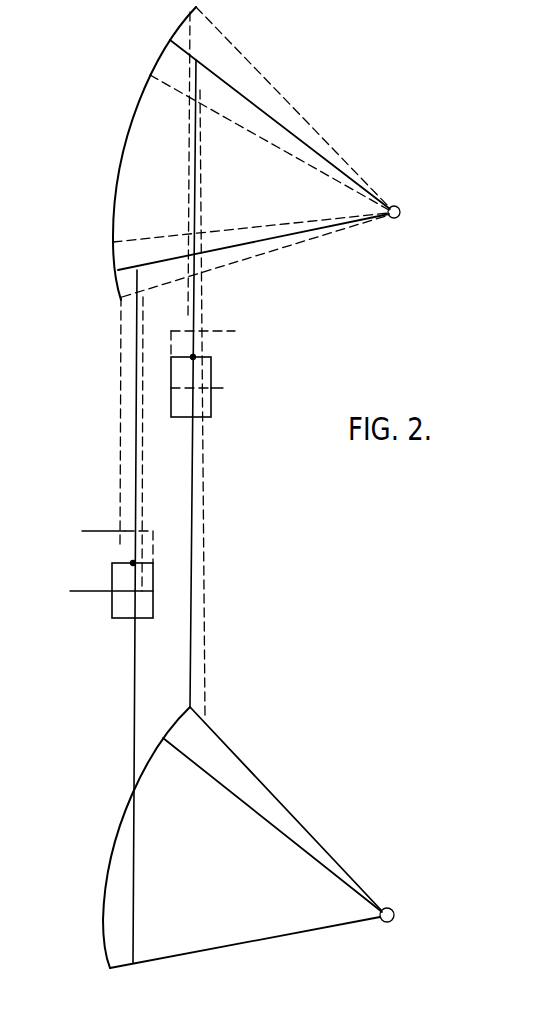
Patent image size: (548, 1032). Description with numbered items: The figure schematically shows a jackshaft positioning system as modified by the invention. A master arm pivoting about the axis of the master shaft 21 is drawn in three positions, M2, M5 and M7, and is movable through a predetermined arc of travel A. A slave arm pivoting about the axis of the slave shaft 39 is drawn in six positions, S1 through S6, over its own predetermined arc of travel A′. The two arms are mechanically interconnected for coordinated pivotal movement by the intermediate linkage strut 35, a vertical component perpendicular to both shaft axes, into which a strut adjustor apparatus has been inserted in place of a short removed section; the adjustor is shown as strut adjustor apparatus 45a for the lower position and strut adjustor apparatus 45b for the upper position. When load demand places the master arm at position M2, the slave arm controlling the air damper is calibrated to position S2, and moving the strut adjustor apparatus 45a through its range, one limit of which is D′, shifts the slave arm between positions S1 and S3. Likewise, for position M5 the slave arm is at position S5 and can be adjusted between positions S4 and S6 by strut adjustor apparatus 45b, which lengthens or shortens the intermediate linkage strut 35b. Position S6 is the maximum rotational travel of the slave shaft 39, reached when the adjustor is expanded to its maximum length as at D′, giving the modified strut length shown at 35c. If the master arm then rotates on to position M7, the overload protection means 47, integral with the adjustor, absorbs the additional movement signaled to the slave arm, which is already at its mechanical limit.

The arc of travel of slave arm A′ is at (128, 117).
The arc of travel of master arm A is at (112, 850).
The slave arm position S1 is at (246, 260).
The slave arm position S2 is at (288, 236).
The slave arm position S3 is at (342, 218).
The slave arm position S4 is at (338, 173).
The slave arm position S5 is at (297, 137).
The slave arm position S6 is at (283, 97).
The slave shaft 39 is at (400, 209).
The intermediate linkage strut 35 is at (133, 679).
The intermediate linkage strut 35b is at (193, 475).
The modified intermediate strut length 35c is at (205, 537).
The overload protection means 47 is at (213, 405).
The strut adjustor apparatus 45b is at (210, 344).
The strut adjustor apparatus 45a is at (118, 578).
The adjustor range limit position D′ is at (162, 440).
The master arm position M7 is at (278, 793).
The master arm position M5 is at (313, 856).
The master arm position M2 is at (286, 938).
The master shaft 21 is at (396, 921).